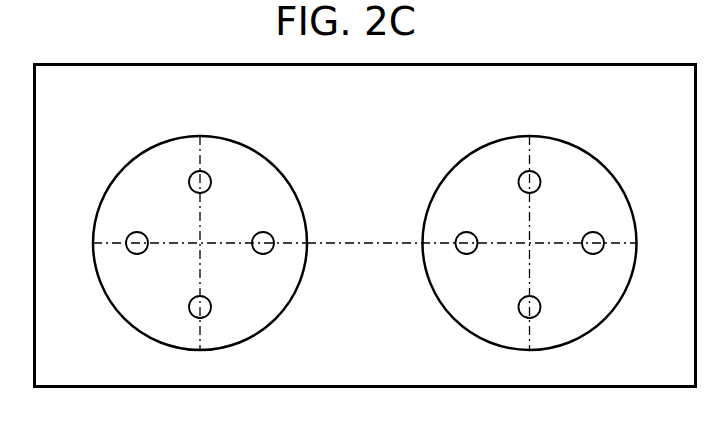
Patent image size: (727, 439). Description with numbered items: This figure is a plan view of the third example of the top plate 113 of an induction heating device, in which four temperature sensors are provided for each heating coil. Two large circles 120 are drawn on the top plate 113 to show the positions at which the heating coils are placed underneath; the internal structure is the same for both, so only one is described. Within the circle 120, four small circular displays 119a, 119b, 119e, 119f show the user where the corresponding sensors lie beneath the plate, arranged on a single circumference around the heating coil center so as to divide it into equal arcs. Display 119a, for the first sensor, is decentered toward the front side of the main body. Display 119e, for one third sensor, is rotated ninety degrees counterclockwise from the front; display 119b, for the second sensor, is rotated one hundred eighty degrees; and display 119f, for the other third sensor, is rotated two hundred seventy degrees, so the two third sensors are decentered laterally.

The top plate 113 is at (602, 64).
The large circle 120 is at (188, 135).
The display 119a is at (192, 316).
The display 119b is at (233, 192).
The display 119e is at (271, 233).
The display 119f is at (130, 233).